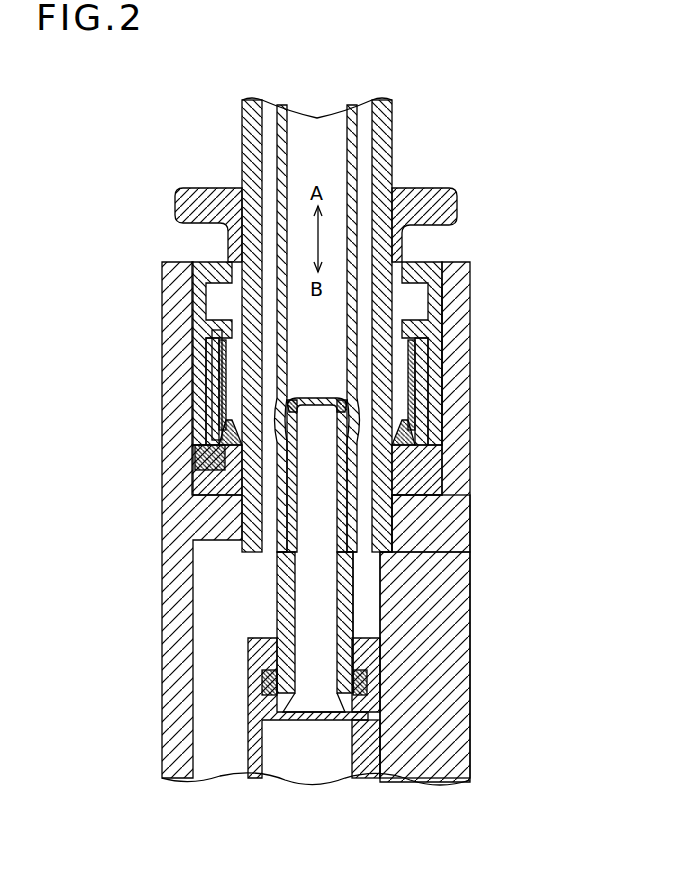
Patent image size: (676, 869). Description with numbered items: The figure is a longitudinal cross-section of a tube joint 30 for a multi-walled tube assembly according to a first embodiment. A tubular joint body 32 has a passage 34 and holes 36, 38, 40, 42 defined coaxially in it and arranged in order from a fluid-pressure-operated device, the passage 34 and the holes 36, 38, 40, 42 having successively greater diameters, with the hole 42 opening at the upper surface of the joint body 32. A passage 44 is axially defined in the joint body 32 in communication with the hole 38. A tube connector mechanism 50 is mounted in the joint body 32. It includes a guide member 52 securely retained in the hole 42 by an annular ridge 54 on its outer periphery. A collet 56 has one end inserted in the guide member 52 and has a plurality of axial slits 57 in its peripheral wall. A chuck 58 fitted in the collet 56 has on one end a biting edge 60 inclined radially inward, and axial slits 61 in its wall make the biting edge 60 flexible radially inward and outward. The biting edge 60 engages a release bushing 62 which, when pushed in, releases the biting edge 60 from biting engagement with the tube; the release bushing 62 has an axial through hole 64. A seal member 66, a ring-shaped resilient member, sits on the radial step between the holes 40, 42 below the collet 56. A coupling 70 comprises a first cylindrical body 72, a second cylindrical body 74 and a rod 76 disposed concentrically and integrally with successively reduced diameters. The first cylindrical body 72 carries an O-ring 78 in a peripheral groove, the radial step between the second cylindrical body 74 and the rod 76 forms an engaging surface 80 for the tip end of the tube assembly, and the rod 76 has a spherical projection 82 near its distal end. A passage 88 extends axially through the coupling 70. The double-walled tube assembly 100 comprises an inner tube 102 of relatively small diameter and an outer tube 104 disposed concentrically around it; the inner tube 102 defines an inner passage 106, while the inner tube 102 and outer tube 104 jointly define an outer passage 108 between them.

The tube joint 30 is at (548, 383).
The tubular joint body 32 is at (160, 325).
The passage 34 is at (352, 745).
The hole 36 is at (380, 660).
The hole 38 is at (384, 578).
The hole 40 is at (392, 525).
The hole 42 is at (462, 292).
The passage 44 is at (220, 750).
The tube connector mechanism 50 is at (452, 188).
The guide member 52 is at (420, 265).
The annular ridge 54 is at (455, 322).
The collet 56 is at (425, 345).
The axial slits 57 is at (200, 455).
The chuck 58 is at (428, 392).
The biting edge 60 is at (420, 435).
The axial slits 61 is at (218, 385).
The release bushing 62 is at (410, 195).
The axial through hole 64 is at (240, 190).
The seal member 66 is at (440, 470).
The coupling 70 is at (250, 658).
The first cylindrical body 72 is at (262, 692).
The second cylindrical body 74 is at (280, 590).
The rod 76 is at (290, 512).
The O-ring 78 is at (368, 688).
The engaging surface 80 is at (280, 550).
The spherical projection 82 is at (288, 408).
The passage 88 is at (300, 712).
The double-walled tube assembly 100 is at (306, 170).
The inner tube 102 is at (268, 104).
The outer tube 104 is at (248, 100).
The inner passage 106 is at (326, 130).
The outer passage 108 is at (366, 108).